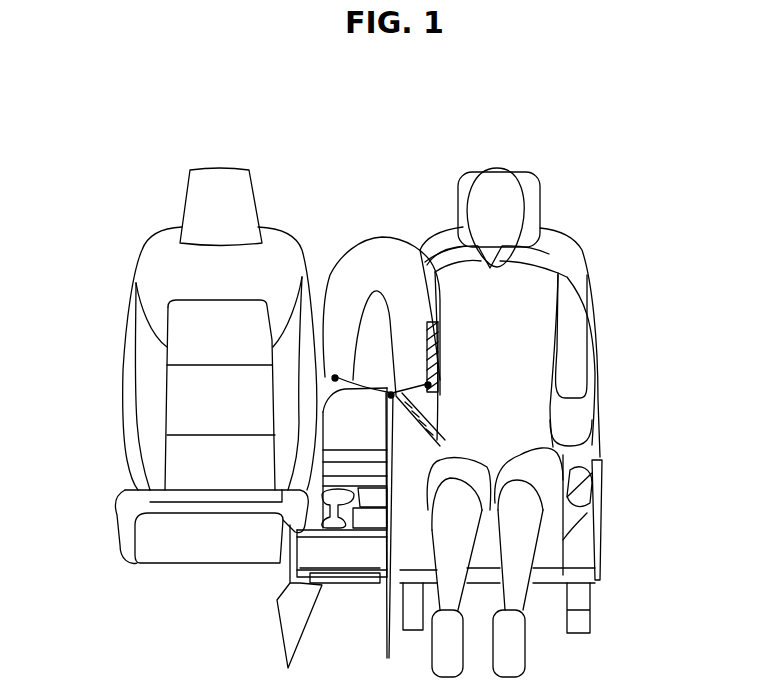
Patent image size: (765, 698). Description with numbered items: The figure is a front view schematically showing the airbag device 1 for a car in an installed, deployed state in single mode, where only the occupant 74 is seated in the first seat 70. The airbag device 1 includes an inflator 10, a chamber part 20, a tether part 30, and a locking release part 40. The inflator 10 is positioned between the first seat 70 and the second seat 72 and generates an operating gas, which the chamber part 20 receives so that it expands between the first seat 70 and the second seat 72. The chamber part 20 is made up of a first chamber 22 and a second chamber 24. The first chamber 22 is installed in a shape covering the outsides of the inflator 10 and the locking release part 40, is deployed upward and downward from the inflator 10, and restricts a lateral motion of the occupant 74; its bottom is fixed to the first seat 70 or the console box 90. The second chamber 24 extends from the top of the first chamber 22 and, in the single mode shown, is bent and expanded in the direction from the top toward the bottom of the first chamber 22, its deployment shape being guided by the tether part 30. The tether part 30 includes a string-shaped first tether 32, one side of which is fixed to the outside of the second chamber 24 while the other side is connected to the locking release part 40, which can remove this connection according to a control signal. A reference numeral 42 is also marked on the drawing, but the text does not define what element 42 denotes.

The airbag device 1 is at (368, 189).
The inflator 10 is at (443, 343).
The chamber part 20 is at (398, 233).
The first chamber 22 is at (443, 402).
The second chamber 24 is at (330, 275).
The tether part 30 is at (443, 455).
The first tether 32 is at (338, 393).
The locking release part 40 is at (440, 412).
The inflator 42 is at (443, 385).
The first seat 70 is at (596, 546).
The second seat 72 is at (120, 510).
The occupant 74 is at (507, 208).
The console box 90 is at (350, 555).